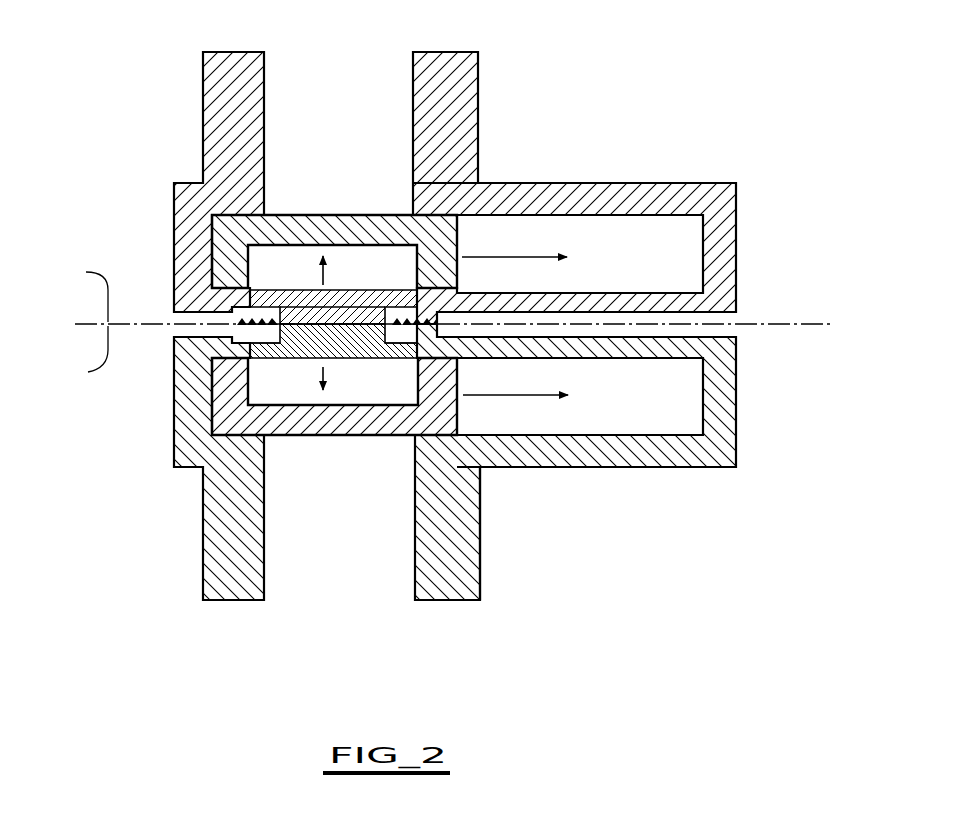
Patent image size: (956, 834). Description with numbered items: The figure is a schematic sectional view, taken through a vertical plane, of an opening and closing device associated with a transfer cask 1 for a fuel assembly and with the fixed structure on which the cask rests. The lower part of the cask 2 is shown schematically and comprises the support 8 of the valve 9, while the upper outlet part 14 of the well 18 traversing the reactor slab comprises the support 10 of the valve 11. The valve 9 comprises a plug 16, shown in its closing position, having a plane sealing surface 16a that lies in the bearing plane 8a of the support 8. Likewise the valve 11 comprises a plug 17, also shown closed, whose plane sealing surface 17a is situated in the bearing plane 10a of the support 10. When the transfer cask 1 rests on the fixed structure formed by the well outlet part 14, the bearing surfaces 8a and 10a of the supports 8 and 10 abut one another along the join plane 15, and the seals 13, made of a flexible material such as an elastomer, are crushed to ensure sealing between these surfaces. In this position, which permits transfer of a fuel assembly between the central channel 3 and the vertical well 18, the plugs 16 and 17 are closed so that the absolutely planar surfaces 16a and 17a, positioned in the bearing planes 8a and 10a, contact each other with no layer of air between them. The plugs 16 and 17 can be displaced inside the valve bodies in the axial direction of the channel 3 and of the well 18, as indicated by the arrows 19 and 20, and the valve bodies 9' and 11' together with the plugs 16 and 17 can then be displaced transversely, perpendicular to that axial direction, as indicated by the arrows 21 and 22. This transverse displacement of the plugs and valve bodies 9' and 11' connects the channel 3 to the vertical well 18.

The transfer cask 1 is at (200, 80).
The cask 2 is at (478, 100).
The central channel 3 is at (290, 100).
The support 8 is at (680, 185).
The bearing plane 8a is at (79, 288).
The valve 9 is at (629, 249).
The valve body 9' is at (334, 220).
The support 10 is at (705, 467).
The bearing plane 10a is at (101, 367).
The valve 11 is at (637, 396).
The valve body 11' is at (334, 429).
The seals 13 is at (393, 318).
The upper outlet part 14 is at (470, 573).
The join plane 15 is at (778, 323).
The plug 16 is at (268, 300).
The plane sealing surface 16a is at (347, 322).
The plug 17 is at (298, 347).
The plane sealing surface 17a is at (380, 333).
The well 18 is at (378, 545).
The arrow 19 is at (323, 283).
The arrow 20 is at (342, 378).
The arrow 21 is at (535, 258).
The arrow 22 is at (530, 403).